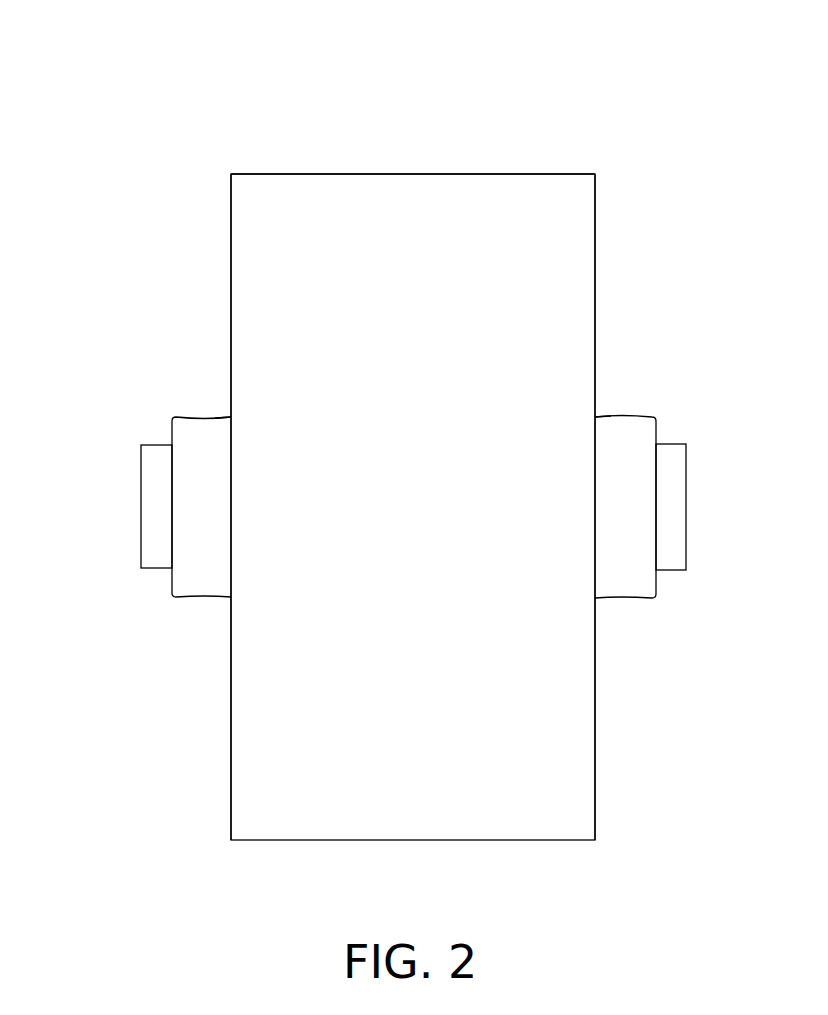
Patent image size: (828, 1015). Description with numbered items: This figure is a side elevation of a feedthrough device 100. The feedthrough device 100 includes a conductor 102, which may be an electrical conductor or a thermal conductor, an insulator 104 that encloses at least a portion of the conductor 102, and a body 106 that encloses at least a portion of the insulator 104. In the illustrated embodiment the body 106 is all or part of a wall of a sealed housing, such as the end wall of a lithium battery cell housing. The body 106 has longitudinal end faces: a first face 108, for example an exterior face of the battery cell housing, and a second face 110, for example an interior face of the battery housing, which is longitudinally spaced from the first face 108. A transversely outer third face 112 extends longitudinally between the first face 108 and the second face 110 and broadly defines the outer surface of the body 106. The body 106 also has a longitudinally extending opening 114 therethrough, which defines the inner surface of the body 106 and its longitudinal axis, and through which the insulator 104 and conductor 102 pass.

The feedthrough device 100 is at (235, 82).
The conductor 102 is at (141, 550).
The insulator 104 is at (172, 430).
The body 106 is at (231, 174).
The first face 108 is at (231, 760).
The second face 110 is at (595, 723).
The third face 112 is at (407, 174).
The opening 114 is at (231, 417).